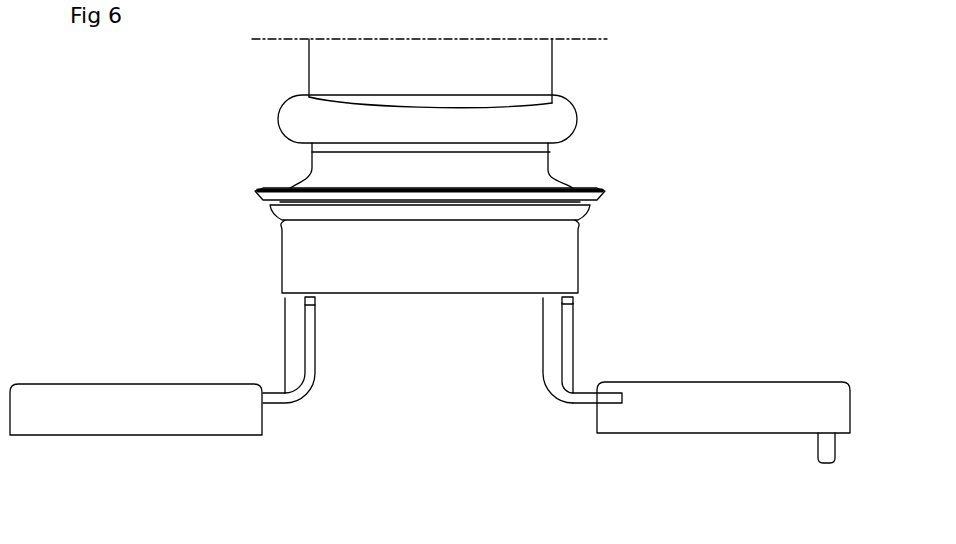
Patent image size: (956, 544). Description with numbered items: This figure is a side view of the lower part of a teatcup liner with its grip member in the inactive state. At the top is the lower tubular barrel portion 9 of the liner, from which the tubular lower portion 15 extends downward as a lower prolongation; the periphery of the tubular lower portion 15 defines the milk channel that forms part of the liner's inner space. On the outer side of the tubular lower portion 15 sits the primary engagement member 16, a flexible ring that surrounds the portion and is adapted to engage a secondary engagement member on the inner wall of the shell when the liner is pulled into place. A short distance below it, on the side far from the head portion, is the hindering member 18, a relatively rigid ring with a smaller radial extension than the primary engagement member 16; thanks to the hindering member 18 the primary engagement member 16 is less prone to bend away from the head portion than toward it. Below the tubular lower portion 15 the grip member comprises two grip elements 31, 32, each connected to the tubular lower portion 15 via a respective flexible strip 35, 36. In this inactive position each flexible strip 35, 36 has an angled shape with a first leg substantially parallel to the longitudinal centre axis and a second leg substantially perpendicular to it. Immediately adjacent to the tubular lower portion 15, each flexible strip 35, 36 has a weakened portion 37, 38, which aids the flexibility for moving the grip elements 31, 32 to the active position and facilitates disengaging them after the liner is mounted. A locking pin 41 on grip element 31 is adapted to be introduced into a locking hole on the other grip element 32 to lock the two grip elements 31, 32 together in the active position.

The lower tubular barrel portion 9 is at (532, 83).
The tubular lower portion 15 is at (532, 167).
The primary engagement member 16 is at (605, 192).
The hindering member 18 is at (573, 213).
The grip element 31 is at (730, 398).
The grip element 32 is at (85, 399).
The flexible strip 35 is at (547, 382).
The flexible strip 36 is at (312, 371).
The weakened portion 37 is at (573, 300).
The weakened portion 38 is at (282, 298).
The locking pin 41 is at (817, 445).